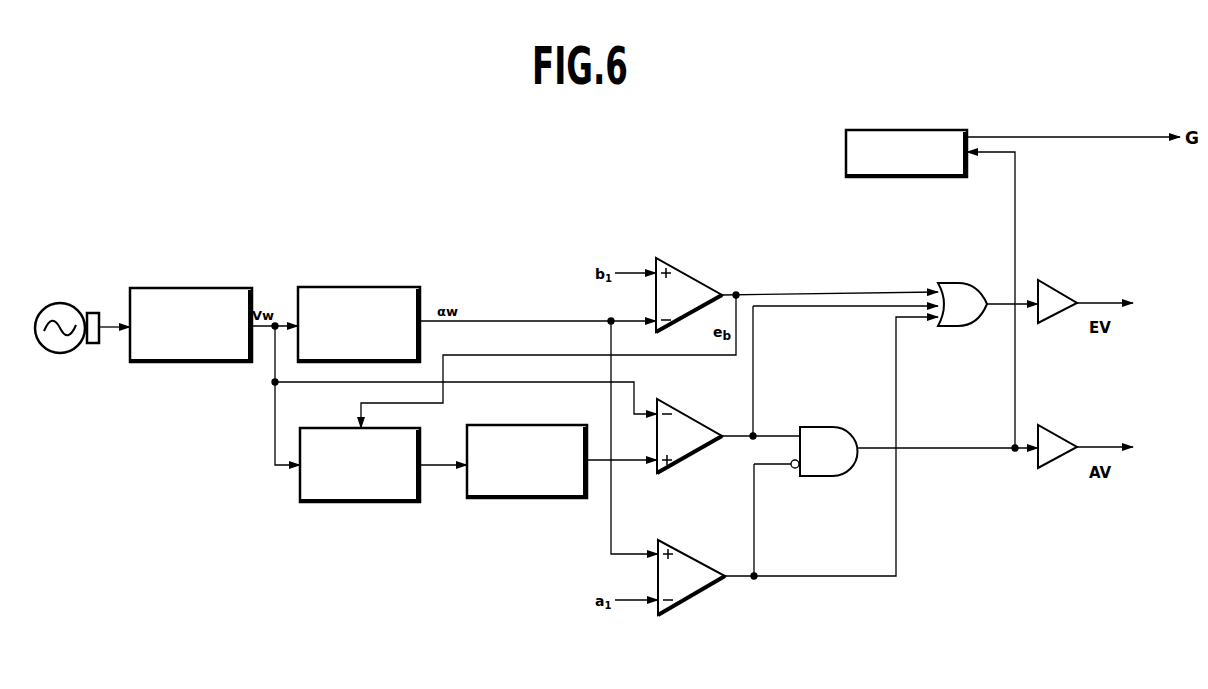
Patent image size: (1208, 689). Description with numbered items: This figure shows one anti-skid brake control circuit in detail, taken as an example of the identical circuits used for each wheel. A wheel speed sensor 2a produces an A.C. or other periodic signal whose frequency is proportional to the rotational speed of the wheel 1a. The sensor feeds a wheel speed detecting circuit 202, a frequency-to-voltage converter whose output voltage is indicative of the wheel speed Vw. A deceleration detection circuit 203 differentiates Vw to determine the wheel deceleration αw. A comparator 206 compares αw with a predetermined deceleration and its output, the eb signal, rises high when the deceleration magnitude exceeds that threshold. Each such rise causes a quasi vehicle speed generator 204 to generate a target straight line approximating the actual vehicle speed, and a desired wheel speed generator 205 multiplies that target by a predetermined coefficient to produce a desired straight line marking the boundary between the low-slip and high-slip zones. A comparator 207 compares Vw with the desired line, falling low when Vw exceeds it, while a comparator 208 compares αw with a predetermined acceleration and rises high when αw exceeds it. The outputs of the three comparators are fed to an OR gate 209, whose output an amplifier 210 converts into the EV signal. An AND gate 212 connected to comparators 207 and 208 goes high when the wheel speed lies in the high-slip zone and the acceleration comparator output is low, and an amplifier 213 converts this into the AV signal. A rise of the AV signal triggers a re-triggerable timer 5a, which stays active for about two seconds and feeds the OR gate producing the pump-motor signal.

The wheel 1a is at (62, 303).
The wheel speed sensor 2a is at (93, 344).
The timer 5a is at (944, 130).
The wheel speed detecting circuit 202 is at (233, 288).
The deceleration detection circuit 203 is at (397, 287).
The quasi vehicle speed generator 204 is at (400, 502).
The desired wheel speed generator 205 is at (565, 498).
The comparator 206 is at (702, 277).
The comparator 207 is at (701, 419).
The comparator 208 is at (703, 560).
The OR gate 209 is at (969, 285).
The amplifier 210 is at (1060, 284).
The AND gate 212 is at (841, 427).
The amplifier 213 is at (1063, 430).